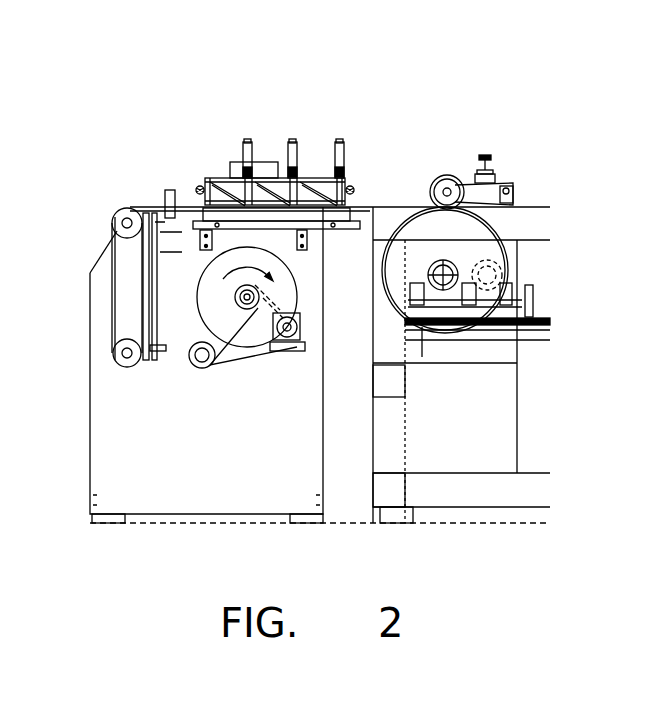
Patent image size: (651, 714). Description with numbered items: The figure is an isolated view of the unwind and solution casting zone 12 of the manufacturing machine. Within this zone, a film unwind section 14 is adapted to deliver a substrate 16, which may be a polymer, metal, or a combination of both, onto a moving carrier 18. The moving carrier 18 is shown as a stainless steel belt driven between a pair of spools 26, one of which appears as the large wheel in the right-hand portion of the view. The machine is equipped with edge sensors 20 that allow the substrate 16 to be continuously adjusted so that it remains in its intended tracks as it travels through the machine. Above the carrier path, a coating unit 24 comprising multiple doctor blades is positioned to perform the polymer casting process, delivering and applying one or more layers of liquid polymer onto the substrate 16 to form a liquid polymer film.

The unwind and solution casting zone 12 is at (193, 125).
The film unwind section 14 is at (257, 370).
The substrate 16 is at (90, 450).
The moving carrier 18 is at (535, 340).
The edge sensors 20 is at (169, 200).
The coating unit 24 is at (293, 130).
The spools 26 is at (507, 260).